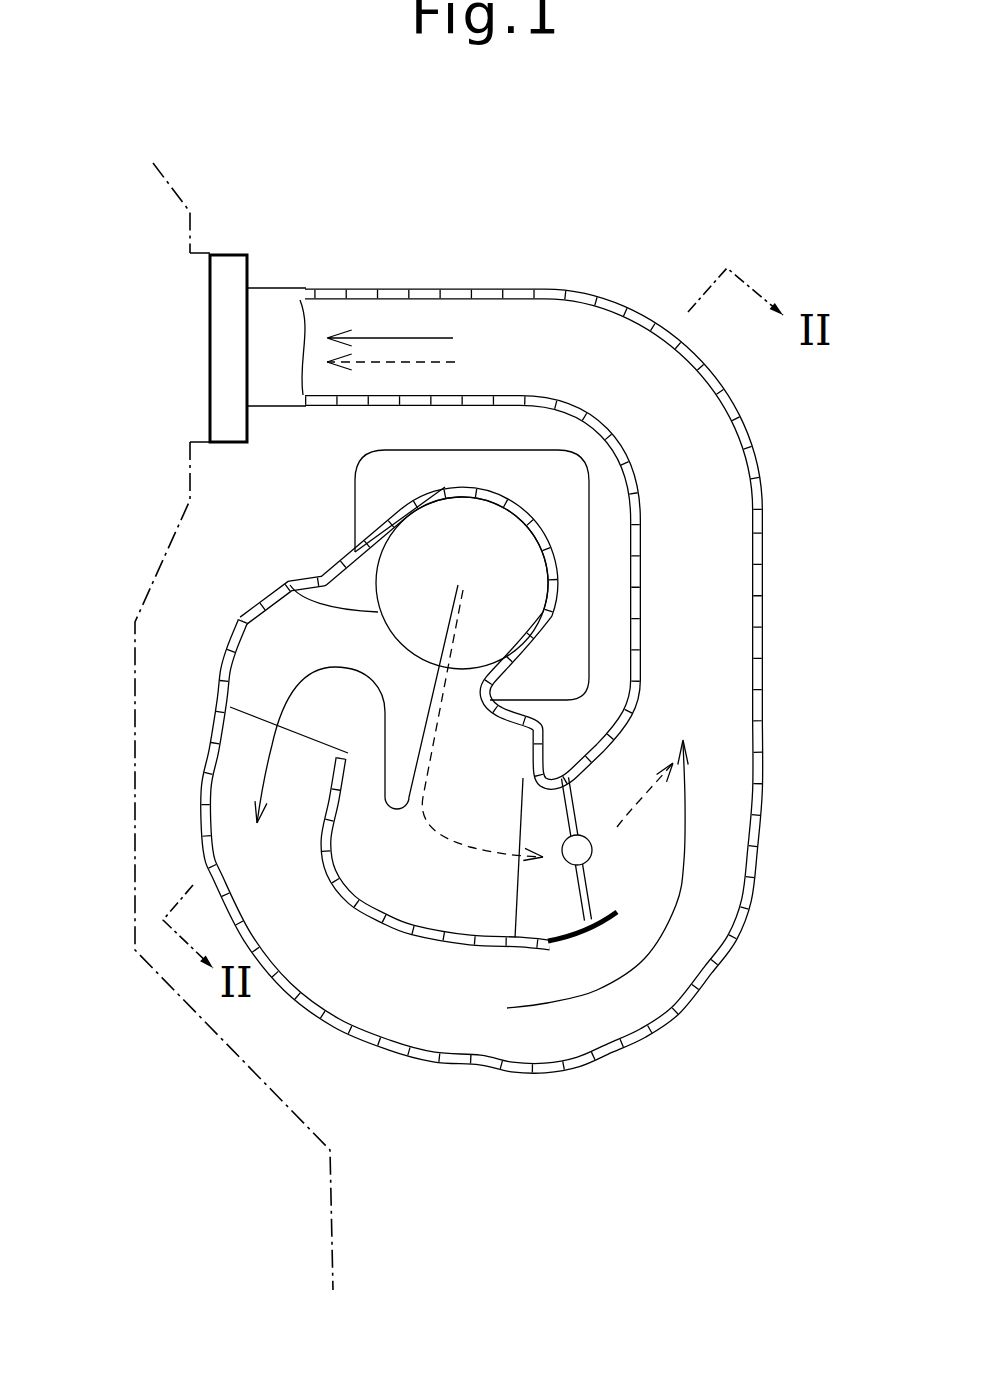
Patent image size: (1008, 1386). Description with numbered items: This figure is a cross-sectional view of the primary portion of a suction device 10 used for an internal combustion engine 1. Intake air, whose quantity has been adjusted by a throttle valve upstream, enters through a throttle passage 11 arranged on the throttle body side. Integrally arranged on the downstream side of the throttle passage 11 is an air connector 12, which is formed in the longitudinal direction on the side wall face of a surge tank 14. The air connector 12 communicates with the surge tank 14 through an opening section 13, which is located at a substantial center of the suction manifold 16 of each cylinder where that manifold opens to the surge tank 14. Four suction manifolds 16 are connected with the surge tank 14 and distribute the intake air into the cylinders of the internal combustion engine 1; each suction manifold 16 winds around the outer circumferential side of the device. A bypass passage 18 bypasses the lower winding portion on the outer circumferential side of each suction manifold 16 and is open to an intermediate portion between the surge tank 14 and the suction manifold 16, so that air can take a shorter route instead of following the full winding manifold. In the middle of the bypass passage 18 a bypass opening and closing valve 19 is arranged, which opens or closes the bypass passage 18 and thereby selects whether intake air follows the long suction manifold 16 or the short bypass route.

The internal combustion engine 1 is at (340, 1233).
The suction device 10 is at (603, 275).
The throttle passage 11 is at (455, 468).
The air connector 12 is at (463, 488).
The opening section 13 is at (290, 585).
The surge tank 14 is at (403, 902).
The suction manifold 16 is at (763, 565).
The bypass passage 18 is at (546, 930).
The bypass opening and closing valve 19 is at (587, 883).